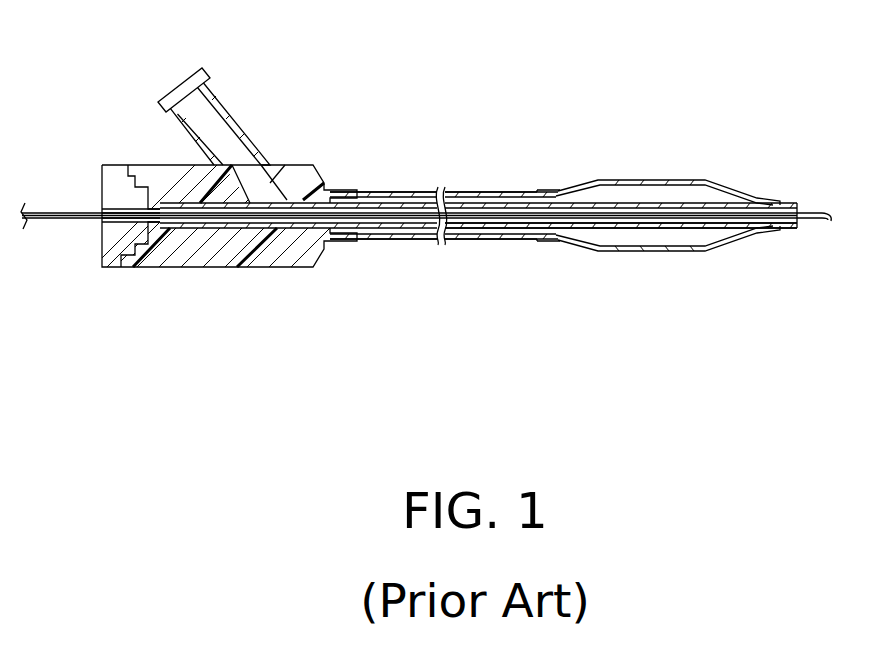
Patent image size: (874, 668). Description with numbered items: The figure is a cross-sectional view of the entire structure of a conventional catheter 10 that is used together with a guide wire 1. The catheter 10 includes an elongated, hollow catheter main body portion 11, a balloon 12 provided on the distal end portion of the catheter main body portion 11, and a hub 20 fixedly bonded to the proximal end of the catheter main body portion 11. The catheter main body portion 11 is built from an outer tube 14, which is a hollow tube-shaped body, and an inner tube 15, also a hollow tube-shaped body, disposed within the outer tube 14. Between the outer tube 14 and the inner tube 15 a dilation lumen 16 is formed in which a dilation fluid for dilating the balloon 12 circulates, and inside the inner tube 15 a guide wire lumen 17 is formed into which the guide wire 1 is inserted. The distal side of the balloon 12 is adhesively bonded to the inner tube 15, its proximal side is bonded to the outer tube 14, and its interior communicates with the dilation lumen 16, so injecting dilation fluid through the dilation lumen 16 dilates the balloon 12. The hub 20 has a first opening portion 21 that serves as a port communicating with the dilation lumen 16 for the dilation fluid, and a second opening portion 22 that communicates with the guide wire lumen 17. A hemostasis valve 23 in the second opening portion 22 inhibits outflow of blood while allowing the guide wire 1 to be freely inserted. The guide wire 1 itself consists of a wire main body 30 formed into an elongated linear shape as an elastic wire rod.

The guide wire 1 is at (373, 220).
The catheter 10 is at (752, 168).
The catheter main body portion 11 is at (482, 190).
The balloon 12 is at (640, 180).
The outer tube 14 is at (520, 193).
The inner tube 15 is at (450, 192).
The dilation lumen 16 is at (460, 233).
The guide wire lumen 17 is at (502, 222).
The hub 20 is at (210, 268).
The first opening portion 21 is at (182, 82).
The second opening portion 22 is at (103, 211).
The hemostasis valve 23 is at (125, 238).
The wire main body 30 is at (668, 222).